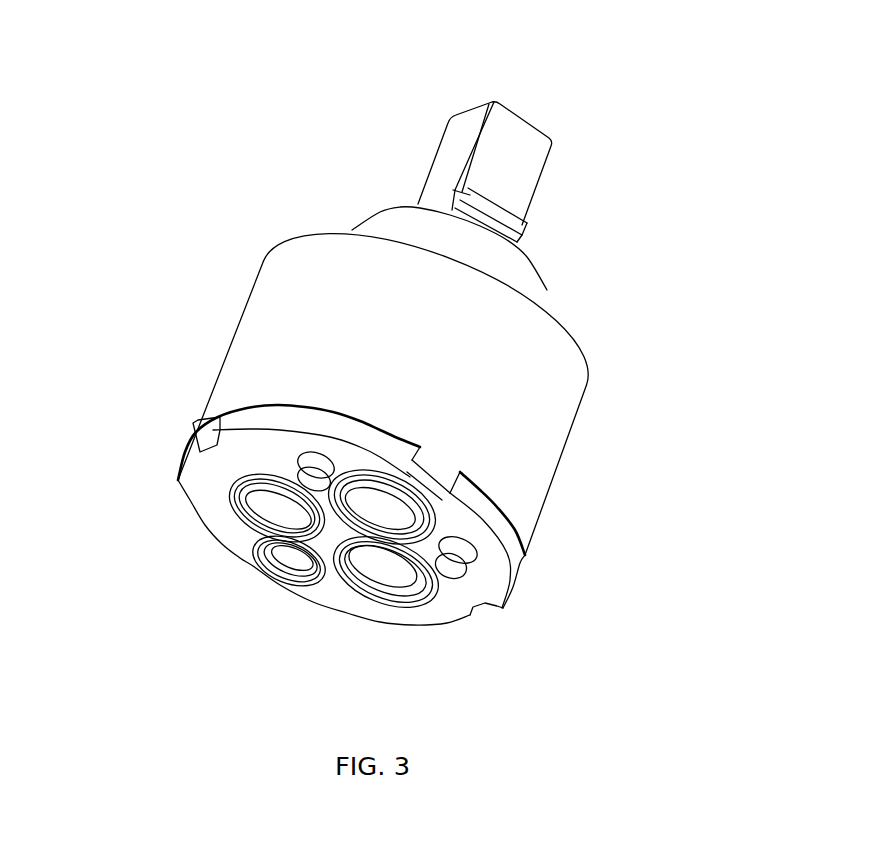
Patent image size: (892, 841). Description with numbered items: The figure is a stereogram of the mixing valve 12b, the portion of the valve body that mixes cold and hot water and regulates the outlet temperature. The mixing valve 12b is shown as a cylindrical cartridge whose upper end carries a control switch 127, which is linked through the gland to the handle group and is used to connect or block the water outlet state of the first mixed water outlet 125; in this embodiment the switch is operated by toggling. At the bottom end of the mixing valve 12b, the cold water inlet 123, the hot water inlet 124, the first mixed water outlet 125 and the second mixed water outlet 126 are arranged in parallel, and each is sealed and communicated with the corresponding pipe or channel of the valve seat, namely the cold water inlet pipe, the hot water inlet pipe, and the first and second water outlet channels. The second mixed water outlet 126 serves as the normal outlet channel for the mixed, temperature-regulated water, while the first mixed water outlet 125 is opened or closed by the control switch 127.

The mixing valve 12b is at (310, 315).
The control switch 127 is at (503, 143).
The cold water inlet 123 is at (232, 508).
The hot water inlet 124 is at (375, 568).
The first mixed water outlet 125 is at (443, 496).
The second mixed water outlet 126 is at (292, 557).